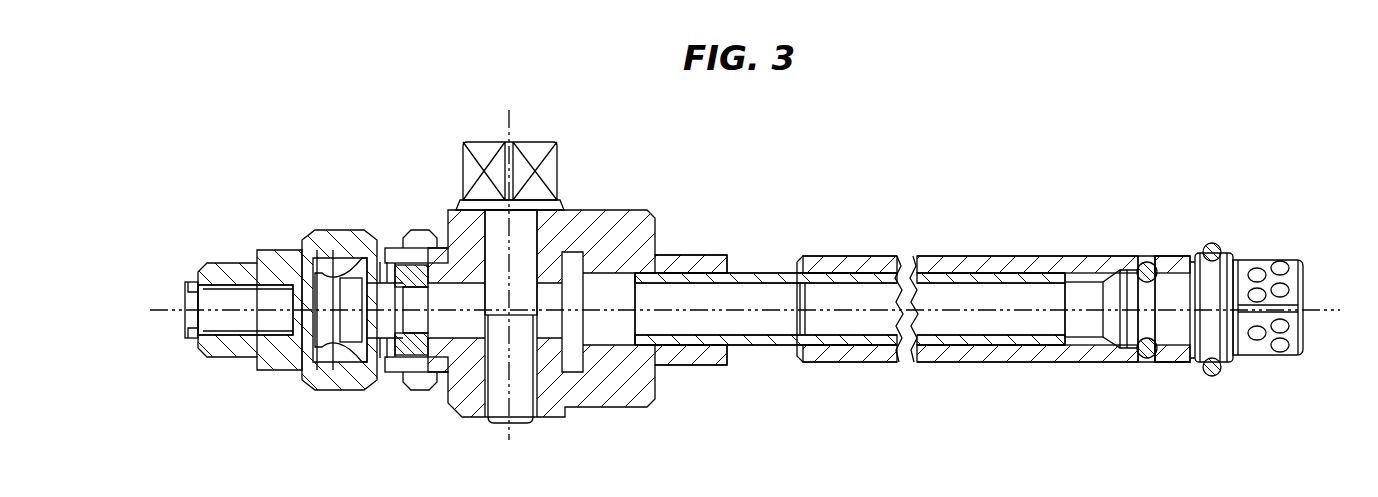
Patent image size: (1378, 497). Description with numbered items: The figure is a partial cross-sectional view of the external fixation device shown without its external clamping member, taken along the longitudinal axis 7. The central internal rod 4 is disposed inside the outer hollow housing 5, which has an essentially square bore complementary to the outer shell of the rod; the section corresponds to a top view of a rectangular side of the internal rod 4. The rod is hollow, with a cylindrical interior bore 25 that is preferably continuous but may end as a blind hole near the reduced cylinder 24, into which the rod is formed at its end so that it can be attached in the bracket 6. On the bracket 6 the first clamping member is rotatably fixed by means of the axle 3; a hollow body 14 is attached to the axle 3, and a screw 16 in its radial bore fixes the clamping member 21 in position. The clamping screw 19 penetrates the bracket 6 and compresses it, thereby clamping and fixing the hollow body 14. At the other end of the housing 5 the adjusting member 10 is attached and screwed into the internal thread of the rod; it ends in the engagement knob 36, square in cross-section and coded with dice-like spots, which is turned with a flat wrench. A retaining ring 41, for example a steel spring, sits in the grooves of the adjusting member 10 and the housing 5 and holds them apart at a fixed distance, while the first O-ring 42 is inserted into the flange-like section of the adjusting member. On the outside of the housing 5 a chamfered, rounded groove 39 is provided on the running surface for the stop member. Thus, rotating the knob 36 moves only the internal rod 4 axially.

The axle 3 is at (510, 432).
The internal rod 4 is at (752, 347).
The housing 5 is at (944, 357).
The bracket 6 is at (622, 215).
The axis 7 is at (160, 314).
The adjusting member 10 is at (1055, 280).
The hollow body 14 is at (413, 236).
The screw 16 is at (400, 372).
The clamping screw 19 is at (540, 148).
The clamping member 21 is at (225, 268).
The cylinder 24 is at (697, 258).
The interior bore 25 is at (793, 295).
The engagement knob 36 is at (1298, 263).
The groove 39 is at (1172, 364).
The retaining ring 41 is at (1143, 356).
The first O-ring 42 is at (1213, 241).